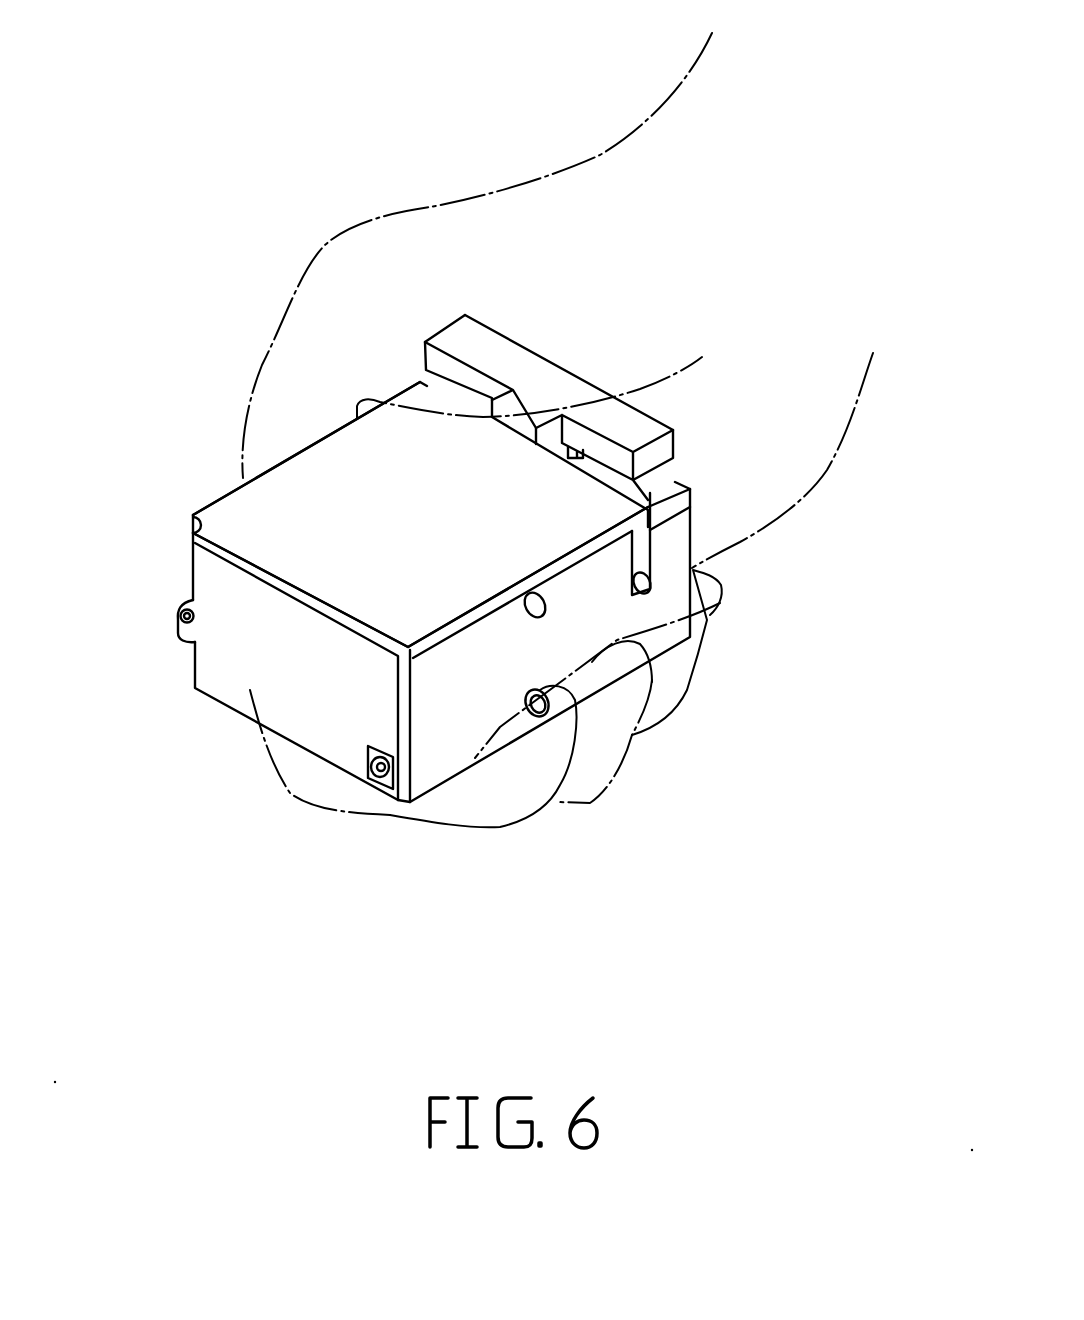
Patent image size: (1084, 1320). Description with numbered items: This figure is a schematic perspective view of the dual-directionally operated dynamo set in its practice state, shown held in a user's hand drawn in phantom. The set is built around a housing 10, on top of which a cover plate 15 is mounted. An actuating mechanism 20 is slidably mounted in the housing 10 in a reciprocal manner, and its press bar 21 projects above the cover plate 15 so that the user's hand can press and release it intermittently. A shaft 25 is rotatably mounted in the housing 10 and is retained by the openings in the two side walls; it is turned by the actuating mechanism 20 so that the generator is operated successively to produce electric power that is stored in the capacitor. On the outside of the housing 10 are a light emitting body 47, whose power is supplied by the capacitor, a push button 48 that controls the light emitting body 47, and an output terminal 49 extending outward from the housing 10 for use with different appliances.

The housing 10 is at (213, 600).
The cover plate 15 is at (295, 483).
The actuating mechanism 20 is at (558, 357).
The press bar 21 is at (635, 422).
The shaft 25 is at (652, 587).
The light emitting body 47 is at (546, 605).
The push button 48 is at (537, 717).
The output terminal 49 is at (384, 782).